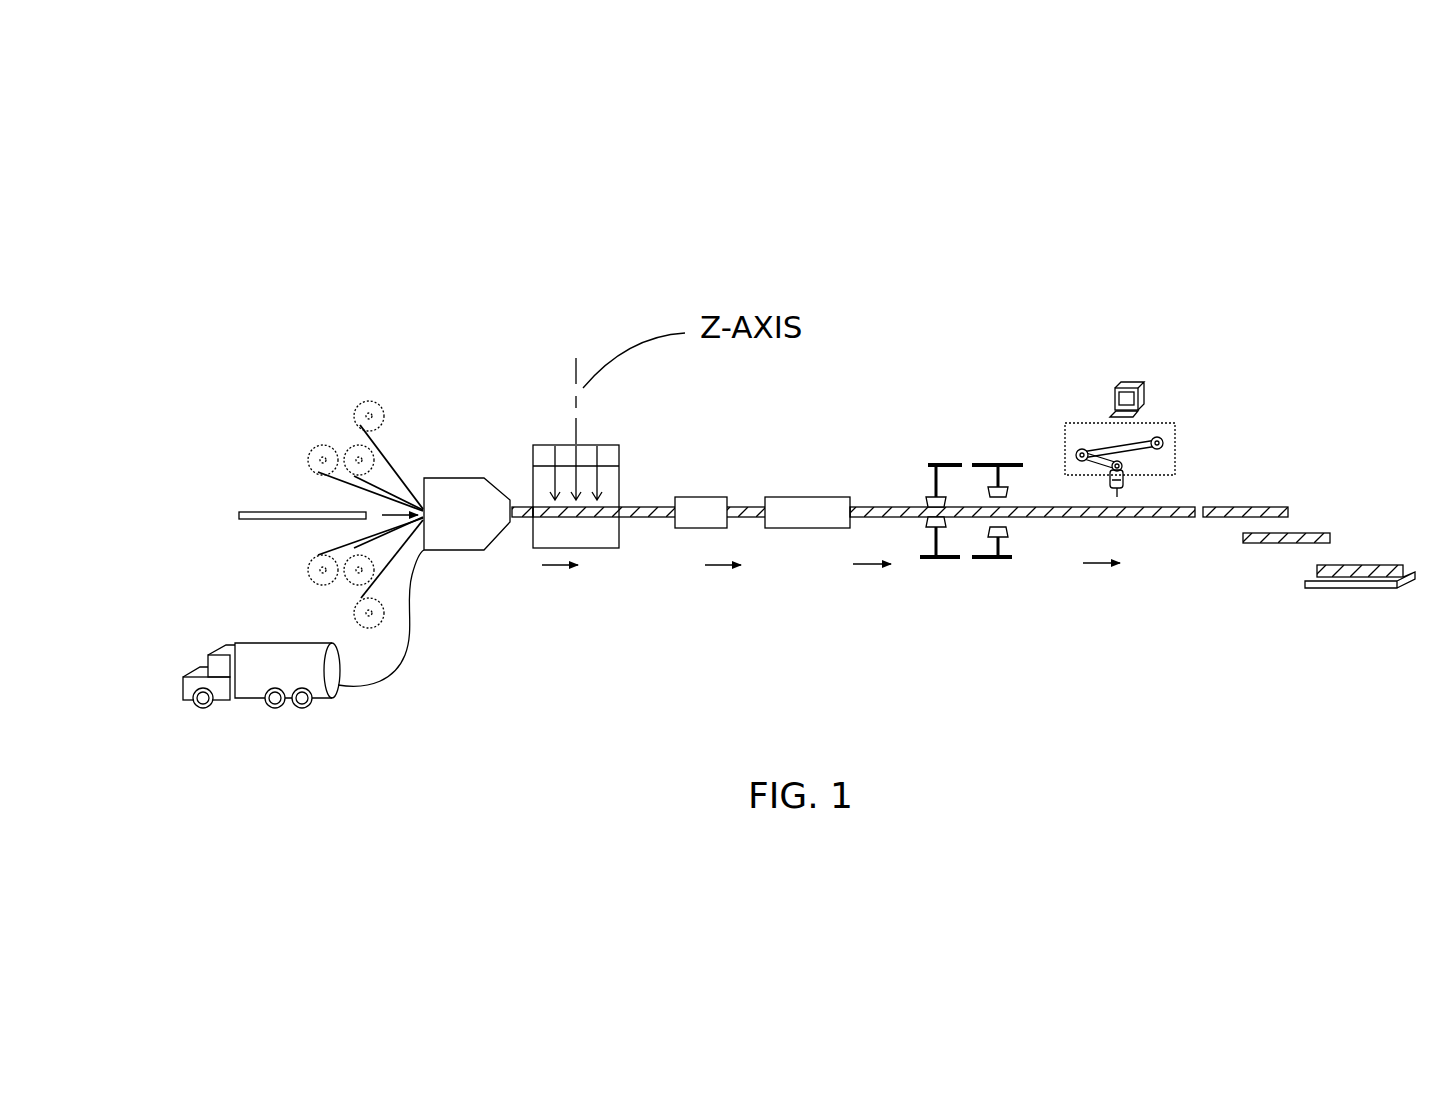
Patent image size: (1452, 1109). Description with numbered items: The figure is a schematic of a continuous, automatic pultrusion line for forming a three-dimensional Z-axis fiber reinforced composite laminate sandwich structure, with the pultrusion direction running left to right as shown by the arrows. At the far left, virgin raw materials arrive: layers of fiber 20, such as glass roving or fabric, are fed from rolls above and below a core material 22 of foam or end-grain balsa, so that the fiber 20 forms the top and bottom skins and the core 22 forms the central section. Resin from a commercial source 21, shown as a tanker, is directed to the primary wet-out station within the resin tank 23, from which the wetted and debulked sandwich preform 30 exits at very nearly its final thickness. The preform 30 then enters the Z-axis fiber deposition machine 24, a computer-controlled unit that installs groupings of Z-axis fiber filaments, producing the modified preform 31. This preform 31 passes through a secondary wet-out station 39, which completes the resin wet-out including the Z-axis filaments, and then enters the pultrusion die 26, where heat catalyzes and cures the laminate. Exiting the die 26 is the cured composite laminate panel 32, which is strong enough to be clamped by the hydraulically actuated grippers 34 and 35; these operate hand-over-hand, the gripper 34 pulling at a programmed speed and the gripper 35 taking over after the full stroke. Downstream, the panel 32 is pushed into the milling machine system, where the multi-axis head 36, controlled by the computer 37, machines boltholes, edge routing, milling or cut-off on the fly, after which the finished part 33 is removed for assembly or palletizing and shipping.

The fiber 20 is at (378, 398).
The commercial resin source 21 is at (270, 642).
The core material 22 is at (267, 510).
The resin tank 23 is at (470, 553).
The Z-axis fiber deposition machine 24 is at (609, 553).
The pultrusion die 26 is at (798, 537).
The sandwich preform 30 is at (522, 506).
The modified preform 31 is at (745, 503).
The cured composite laminate panel 32 is at (872, 518).
The part 33 is at (1247, 498).
The gripper 34 is at (918, 492).
The gripper 35 is at (1013, 492).
The multi-axis machining head 36 is at (1127, 490).
The computer 37 is at (1153, 397).
The secondary wet-out station 39 is at (697, 495).